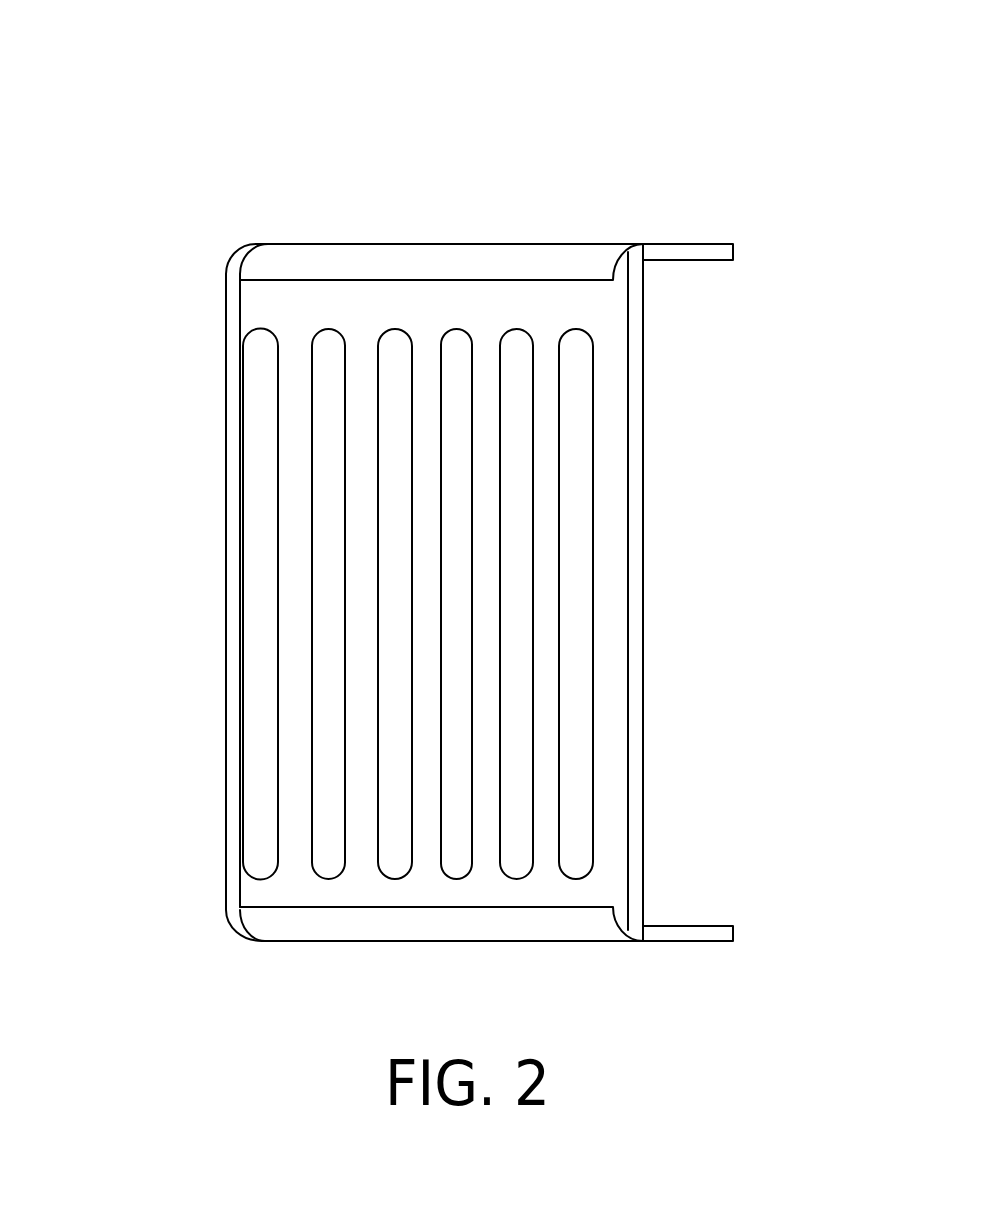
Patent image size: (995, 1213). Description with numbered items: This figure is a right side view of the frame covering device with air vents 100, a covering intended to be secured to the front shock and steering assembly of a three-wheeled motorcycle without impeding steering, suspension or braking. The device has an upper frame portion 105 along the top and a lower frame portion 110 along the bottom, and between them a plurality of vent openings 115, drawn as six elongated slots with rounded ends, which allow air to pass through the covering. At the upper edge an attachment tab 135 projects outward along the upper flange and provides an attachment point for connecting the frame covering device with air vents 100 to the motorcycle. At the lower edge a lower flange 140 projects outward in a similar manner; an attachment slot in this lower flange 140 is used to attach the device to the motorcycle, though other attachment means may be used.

The frame covering device with air vents 100 is at (212, 130).
The upper frame portion 105 is at (420, 257).
The lower frame portion 110 is at (488, 921).
The vent openings 115 is at (328, 575).
The attachment tab 135 is at (683, 249).
The lower flange 140 is at (707, 930).